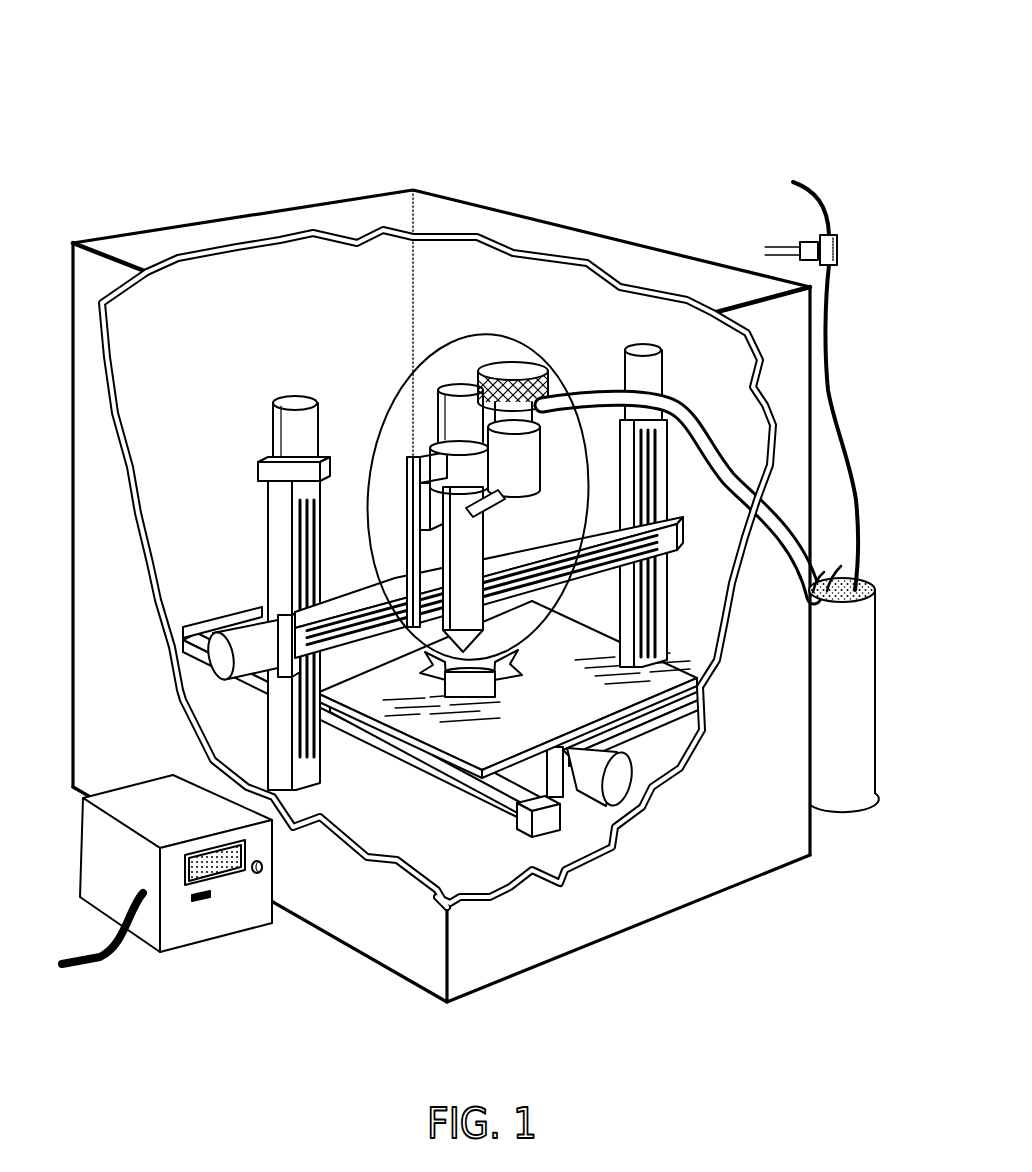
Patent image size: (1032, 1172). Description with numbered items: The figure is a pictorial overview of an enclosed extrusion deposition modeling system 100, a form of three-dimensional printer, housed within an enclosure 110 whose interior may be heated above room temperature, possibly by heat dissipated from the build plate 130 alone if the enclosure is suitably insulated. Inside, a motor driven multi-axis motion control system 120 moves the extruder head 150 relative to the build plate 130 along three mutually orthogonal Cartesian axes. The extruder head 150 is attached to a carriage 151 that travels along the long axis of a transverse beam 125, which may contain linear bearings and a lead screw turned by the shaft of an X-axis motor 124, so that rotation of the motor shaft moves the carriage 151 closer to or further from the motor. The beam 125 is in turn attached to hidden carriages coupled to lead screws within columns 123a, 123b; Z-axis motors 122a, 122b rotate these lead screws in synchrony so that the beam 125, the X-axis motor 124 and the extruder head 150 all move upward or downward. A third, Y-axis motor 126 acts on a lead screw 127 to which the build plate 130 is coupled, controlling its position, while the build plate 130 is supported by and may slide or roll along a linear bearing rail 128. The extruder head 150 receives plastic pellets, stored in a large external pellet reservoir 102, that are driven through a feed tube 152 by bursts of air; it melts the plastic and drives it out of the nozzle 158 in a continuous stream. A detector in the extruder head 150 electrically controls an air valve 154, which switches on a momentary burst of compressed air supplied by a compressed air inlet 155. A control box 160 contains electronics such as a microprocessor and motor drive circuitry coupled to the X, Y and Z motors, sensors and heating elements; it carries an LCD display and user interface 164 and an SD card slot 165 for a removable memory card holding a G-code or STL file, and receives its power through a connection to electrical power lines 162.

The extrusion deposition modeling system 100 is at (628, 106).
The pellet reservoir 102 is at (824, 696).
The enclosure 110 is at (205, 220).
The multi-axis motion control system 120 is at (435, 437).
The Z-axis motor 122a is at (270, 412).
The Z-axis motor 122b is at (621, 363).
The column 123a is at (267, 538).
The column 123b is at (620, 586).
The X-axis motor 124 is at (238, 625).
The transverse beam 125 is at (684, 537).
The Y-axis motor 126 is at (617, 806).
The lead screw 127 is at (533, 763).
The linear bearing rail 128 is at (450, 778).
The build plate 130 is at (533, 726).
The extruder head 150 is at (451, 516).
The carriage 151 is at (428, 637).
The feed tube 152 is at (706, 433).
The air valve 154 is at (812, 240).
The compressed air inlet 155 is at (805, 185).
The nozzle 158 is at (515, 646).
The control box 160 is at (194, 895).
The electrical power lines 162 is at (100, 968).
The LCD display and user interface 164 is at (230, 873).
The SD card slot 165 is at (205, 903).